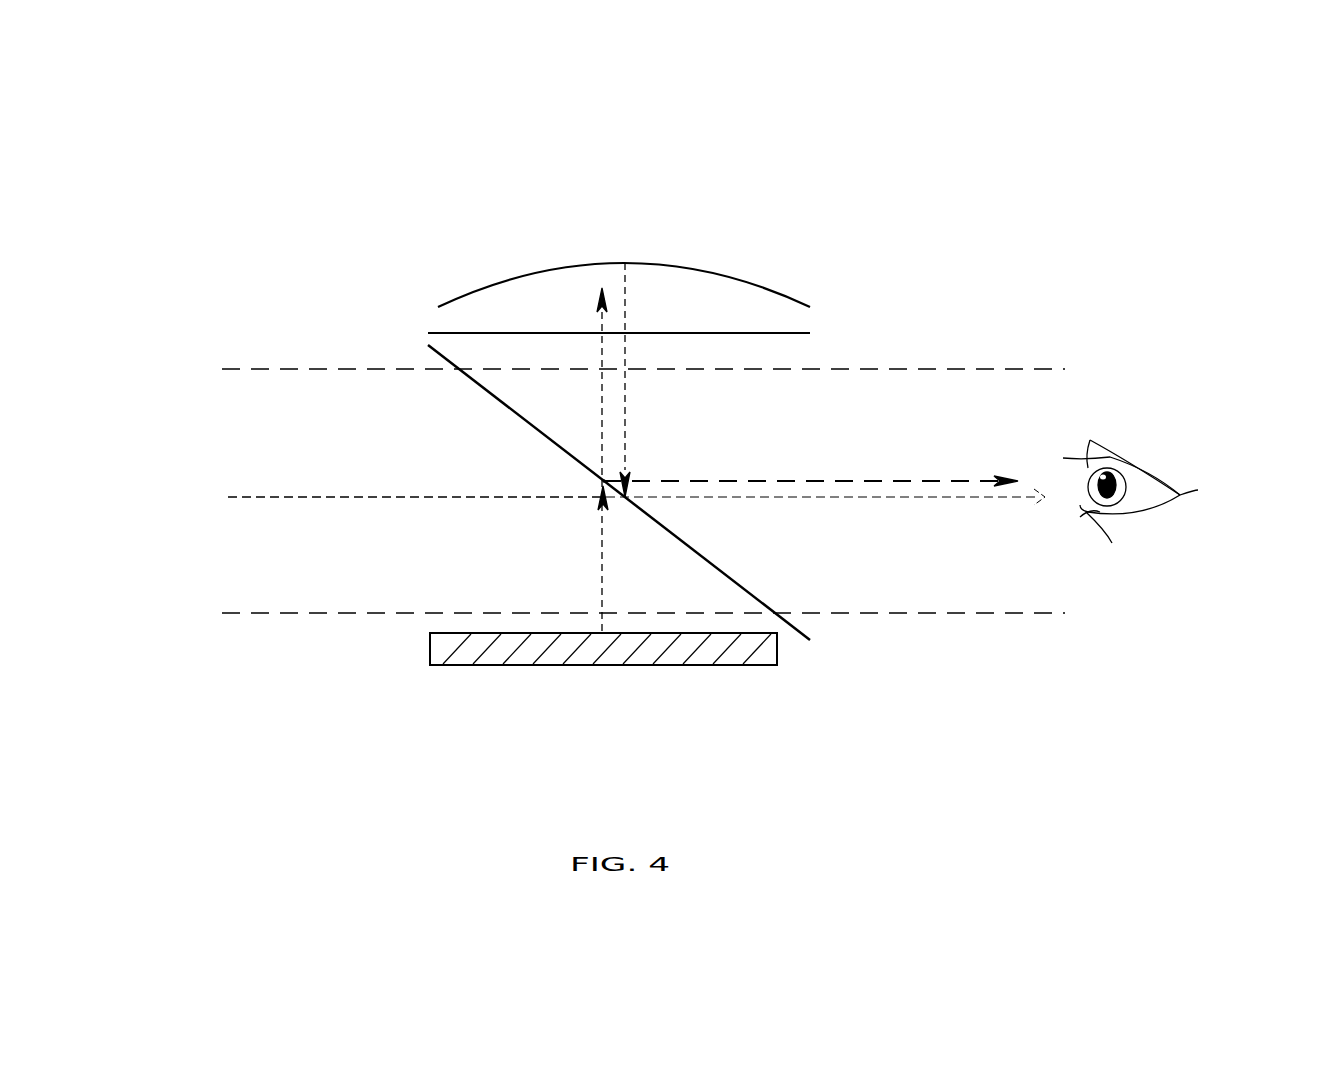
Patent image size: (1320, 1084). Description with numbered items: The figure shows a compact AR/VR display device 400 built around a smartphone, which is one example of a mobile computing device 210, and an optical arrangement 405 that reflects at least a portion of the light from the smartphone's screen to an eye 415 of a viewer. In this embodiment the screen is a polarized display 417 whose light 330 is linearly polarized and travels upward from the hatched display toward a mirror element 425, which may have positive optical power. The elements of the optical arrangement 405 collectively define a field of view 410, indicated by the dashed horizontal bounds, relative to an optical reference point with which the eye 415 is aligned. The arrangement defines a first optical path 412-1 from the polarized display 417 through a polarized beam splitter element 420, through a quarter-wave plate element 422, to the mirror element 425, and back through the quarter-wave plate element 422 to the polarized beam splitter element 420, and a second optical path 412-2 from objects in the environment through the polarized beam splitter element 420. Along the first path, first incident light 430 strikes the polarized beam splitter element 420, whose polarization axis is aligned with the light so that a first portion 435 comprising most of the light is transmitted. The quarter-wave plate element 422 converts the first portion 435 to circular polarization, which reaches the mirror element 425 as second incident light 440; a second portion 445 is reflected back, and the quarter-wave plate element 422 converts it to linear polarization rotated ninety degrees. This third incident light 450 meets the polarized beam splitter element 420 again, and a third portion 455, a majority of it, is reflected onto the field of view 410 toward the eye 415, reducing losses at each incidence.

The compact AR/VR display device 400 is at (1100, 208).
The optical arrangement 405 is at (654, 271).
The field of view 410 is at (976, 395).
The eye 415 is at (1146, 458).
The polarized beam splitter element 420 is at (812, 641).
The quarter-wave plate element 422 is at (777, 337).
The mirror element 425 is at (452, 300).
The first incident light 430 is at (598, 478).
The first portion 435 is at (601, 480).
The second incident light 440 is at (598, 300).
The second portion 445 is at (628, 267).
The third incident light 450 is at (627, 433).
The third portion 455 is at (645, 484).
The first optical path 412-1 is at (818, 463).
The second optical path 412-2 is at (292, 507).
The light 330 is at (600, 632).
The polarized display 417 is at (544, 622).
The mobile computing device 210 is at (740, 666).